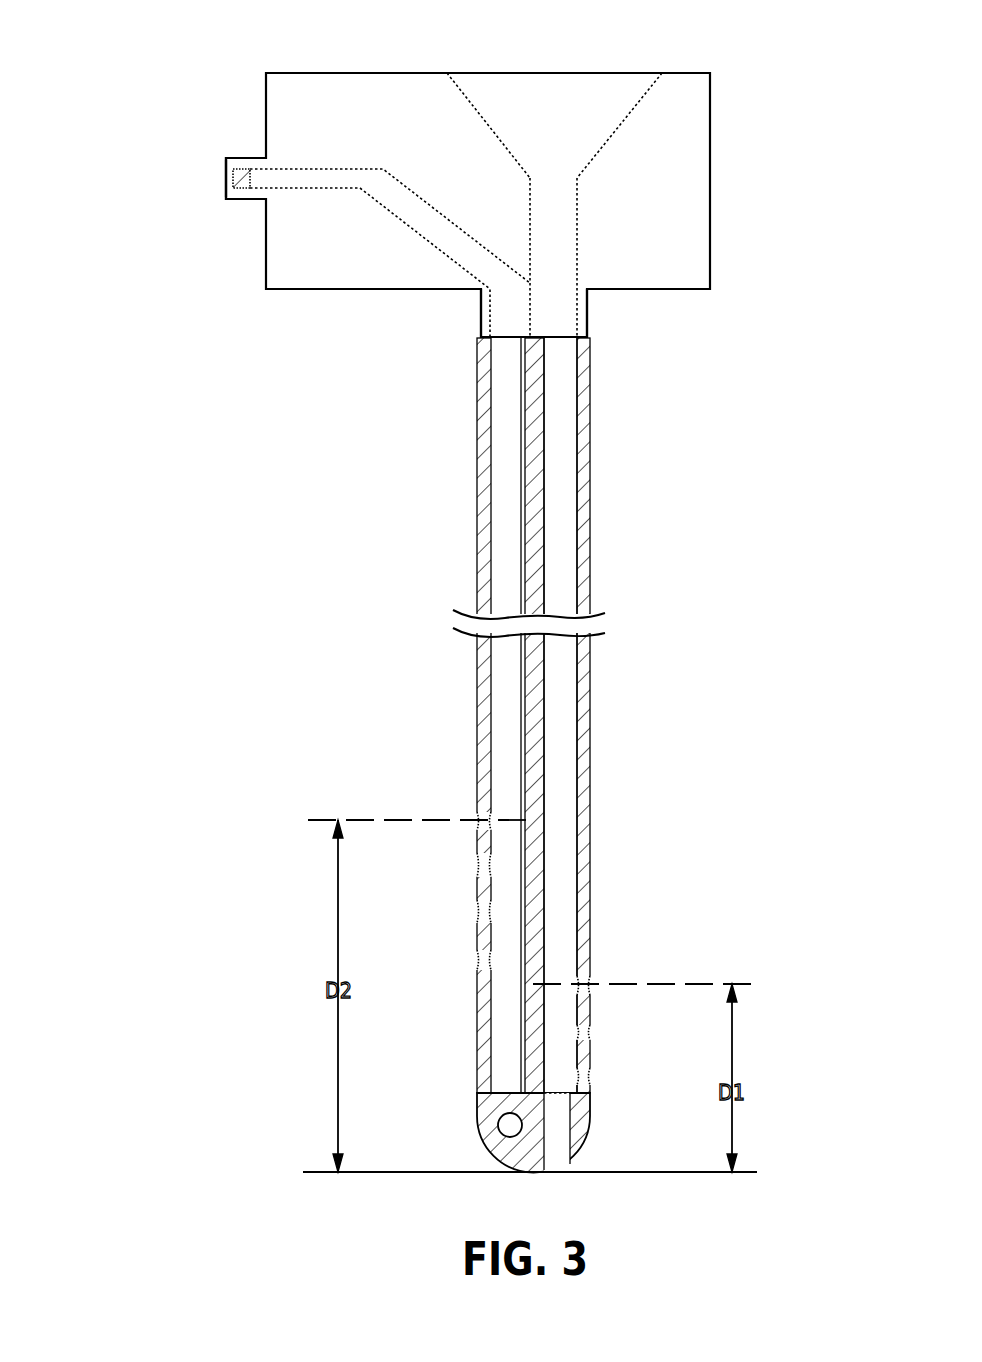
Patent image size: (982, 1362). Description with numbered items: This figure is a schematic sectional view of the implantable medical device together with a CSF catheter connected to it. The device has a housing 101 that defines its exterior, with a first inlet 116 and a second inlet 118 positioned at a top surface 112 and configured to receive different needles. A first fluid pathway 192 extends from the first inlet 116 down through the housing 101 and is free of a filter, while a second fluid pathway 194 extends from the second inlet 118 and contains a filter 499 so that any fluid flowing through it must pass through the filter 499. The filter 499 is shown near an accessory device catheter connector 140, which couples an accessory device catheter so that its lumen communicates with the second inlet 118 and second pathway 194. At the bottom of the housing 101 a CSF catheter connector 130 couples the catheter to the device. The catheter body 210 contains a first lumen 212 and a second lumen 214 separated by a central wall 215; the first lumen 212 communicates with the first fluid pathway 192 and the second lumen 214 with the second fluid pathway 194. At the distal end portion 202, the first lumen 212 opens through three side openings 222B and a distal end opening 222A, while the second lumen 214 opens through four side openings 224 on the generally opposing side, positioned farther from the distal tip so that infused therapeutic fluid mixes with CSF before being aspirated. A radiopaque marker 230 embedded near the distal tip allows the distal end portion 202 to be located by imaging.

The housing 101 is at (710, 117).
The top surface 112 is at (695, 73).
The first inlet 116 is at (541, 62).
The second inlet 118 is at (206, 178).
The filter 499 is at (245, 168).
The accessory device catheter connector 140 is at (245, 200).
The first fluid pathway 192 is at (577, 230).
The second fluid pathway 194 is at (388, 208).
The CSF catheter connector 130 is at (587, 311).
The body 210 is at (478, 698).
The first lumen 212 is at (567, 745).
The second lumen 214 is at (497, 773).
The central wall 215 is at (536, 775).
The side openings 224 is at (483, 917).
The distal end portion 202 is at (678, 922).
The radiopaque marker 230 is at (487, 1120).
The side openings 222B is at (585, 1032).
The distal end opening 222A is at (552, 1155).